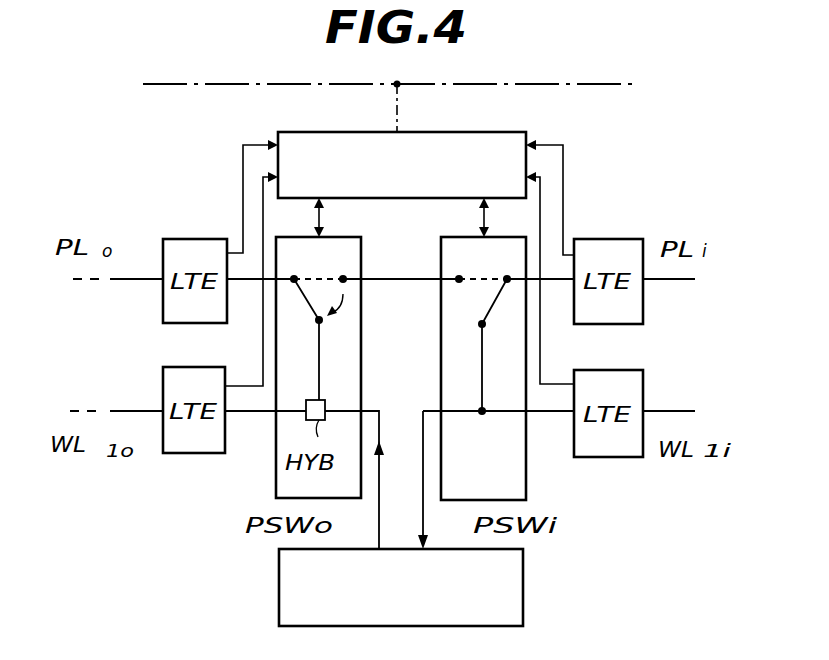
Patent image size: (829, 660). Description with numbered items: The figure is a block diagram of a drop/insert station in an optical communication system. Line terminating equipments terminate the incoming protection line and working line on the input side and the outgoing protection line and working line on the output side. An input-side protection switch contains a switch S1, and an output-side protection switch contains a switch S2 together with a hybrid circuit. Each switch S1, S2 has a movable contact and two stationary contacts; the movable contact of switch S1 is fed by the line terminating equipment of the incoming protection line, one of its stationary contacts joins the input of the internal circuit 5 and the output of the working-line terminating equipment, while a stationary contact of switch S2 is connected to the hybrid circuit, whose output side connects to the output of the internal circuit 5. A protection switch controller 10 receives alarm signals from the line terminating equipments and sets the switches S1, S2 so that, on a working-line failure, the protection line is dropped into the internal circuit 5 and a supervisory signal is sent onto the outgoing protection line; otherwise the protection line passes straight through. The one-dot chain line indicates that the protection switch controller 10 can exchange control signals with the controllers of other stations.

The protection switch controller 10 is at (526, 132).
The internal circuit 5 is at (523, 590).
The switch S1 is at (503, 313).
The switch S2 is at (300, 316).